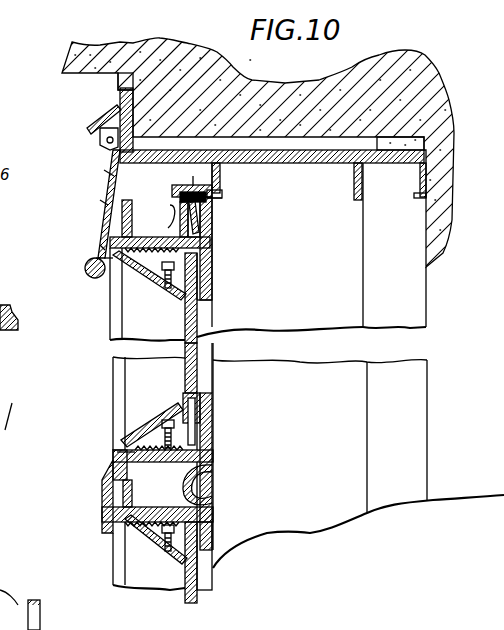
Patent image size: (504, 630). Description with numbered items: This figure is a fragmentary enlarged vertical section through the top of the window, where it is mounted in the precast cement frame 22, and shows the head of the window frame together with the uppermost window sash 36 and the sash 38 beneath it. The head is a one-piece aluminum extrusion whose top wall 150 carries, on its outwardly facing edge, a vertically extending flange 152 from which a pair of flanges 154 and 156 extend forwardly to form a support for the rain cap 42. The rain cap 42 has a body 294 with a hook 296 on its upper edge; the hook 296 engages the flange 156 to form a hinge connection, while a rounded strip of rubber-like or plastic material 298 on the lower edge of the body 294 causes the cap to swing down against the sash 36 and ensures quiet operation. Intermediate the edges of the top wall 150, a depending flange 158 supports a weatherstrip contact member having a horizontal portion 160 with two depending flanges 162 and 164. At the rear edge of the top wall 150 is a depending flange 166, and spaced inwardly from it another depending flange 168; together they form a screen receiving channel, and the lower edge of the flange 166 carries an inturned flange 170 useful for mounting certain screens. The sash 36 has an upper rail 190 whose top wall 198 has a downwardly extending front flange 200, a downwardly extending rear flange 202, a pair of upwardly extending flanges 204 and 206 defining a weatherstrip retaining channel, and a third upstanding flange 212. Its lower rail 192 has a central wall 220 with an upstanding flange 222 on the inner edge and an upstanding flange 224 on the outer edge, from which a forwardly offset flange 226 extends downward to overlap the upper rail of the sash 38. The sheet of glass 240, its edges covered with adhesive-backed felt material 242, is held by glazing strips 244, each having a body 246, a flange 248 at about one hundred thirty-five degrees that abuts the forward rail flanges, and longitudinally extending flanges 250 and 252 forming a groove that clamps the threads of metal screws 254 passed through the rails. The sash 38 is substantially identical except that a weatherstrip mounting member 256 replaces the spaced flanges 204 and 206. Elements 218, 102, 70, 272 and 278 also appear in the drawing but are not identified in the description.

The precast cement frame 22 is at (389, 73).
The vertically extending flange 152 is at (117, 98).
The flange 154 is at (113, 112).
The hook 296 is at (102, 136).
The flange 156 is at (108, 153).
The body 294 is at (105, 177).
The rain cap 42 is at (99, 211).
The third upstanding flange 212 is at (31, 211).
The top wall 198 is at (120, 212).
The front flange 200 is at (101, 245).
The connector 218 is at (109, 260).
The rounded strip of rubber-like or plastic material 298 is at (84, 270).
The adjacent figure element 102 is at (252, 357).
The adjacent figure element 70 is at (8, 350).
The top wall 150 is at (298, 154).
The depending flange 158 is at (220, 173).
The depending flange 162 is at (222, 194).
The depending flange 168 is at (352, 184).
The depending flange 166 is at (418, 174).
The inturned flange 170 is at (421, 200).
The horizontal portion 160 is at (195, 185).
The depending flange 164 is at (178, 192).
The upwardly extending flange 206 is at (212, 219).
The upwardly extending flange 204 is at (210, 228).
The upper rail 190 is at (212, 247).
The rear flange 202 is at (214, 278).
The longitudinally extending flange 252 is at (212, 263).
The felt material 242 is at (212, 296).
The metal screws 254 is at (172, 206).
The body 246 is at (165, 290).
The glazing strip 244 is at (152, 278).
The longitudinally extending flange 250 is at (165, 274).
The sheet of glass 240 is at (185, 312).
The uppermost window sash 36 is at (114, 350).
The window sash 38 is at (133, 589).
The upstanding flange 222 is at (215, 410).
The lower rail 192 is at (213, 432).
The central wall 220 is at (213, 450).
The upstanding flange 224 is at (117, 450).
The weatherstrip mounting member 256 is at (213, 492).
The forwardly offset flange 226 is at (100, 504).
The flange 248 is at (145, 528).
The adjacent element 272 is at (272, 629).
The adjacent element 278 is at (329, 623).